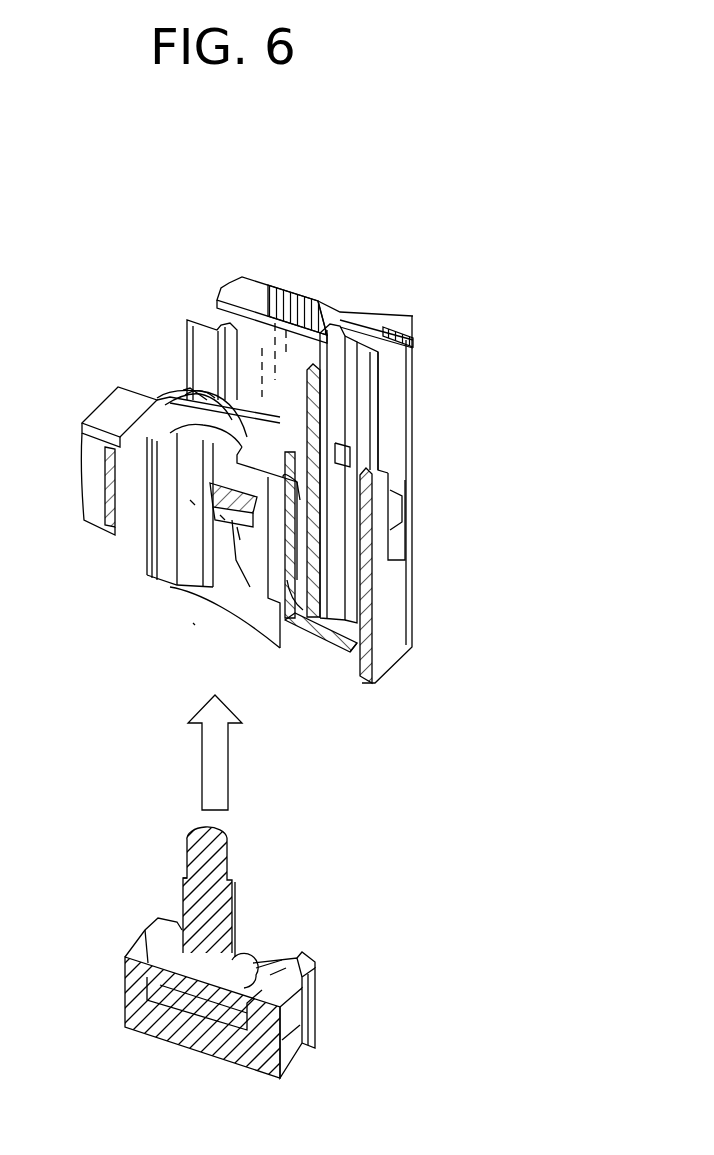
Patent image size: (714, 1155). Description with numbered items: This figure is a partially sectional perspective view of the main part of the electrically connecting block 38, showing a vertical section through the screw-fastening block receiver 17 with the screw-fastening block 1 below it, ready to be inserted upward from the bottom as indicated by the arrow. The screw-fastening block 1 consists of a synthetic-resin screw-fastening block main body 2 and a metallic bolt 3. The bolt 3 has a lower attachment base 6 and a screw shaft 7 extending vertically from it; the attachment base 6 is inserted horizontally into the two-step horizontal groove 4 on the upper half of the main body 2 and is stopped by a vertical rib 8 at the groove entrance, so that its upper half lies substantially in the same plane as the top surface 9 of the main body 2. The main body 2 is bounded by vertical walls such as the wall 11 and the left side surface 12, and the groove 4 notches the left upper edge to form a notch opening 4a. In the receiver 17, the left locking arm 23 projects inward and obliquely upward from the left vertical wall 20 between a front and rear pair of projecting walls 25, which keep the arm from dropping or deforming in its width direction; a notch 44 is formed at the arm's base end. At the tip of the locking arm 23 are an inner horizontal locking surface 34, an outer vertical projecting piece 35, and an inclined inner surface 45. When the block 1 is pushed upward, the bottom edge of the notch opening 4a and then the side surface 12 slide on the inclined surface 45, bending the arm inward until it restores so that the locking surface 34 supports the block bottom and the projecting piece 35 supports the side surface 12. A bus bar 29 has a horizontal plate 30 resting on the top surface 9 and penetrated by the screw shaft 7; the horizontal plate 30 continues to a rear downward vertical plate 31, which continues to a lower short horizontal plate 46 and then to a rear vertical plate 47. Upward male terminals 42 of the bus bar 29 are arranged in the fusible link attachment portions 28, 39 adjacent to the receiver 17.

The screw-fastening block 1 is at (357, 564).
The screw-fastening block main body 2 is at (320, 995).
The bolt 3 is at (236, 866).
The horizontal groove 4 is at (270, 963).
The notch opening 4a is at (288, 963).
The attachment base 6 is at (218, 988).
The screw shaft 7 is at (181, 893).
The vertical rib 8 is at (258, 963).
The top surface 9 is at (150, 948).
The vertical wall 11 is at (288, 1043).
The left side surface 12 is at (305, 950).
The screw-fastening block receiver 17 is at (193, 623).
The left vertical wall 20 is at (245, 545).
The left locking arm 23 is at (240, 513).
The projecting wall 25 is at (190, 500).
The fusible link attachment portion 28 is at (393, 472).
The bus bar 29 is at (323, 652).
The horizontal plate 30 is at (118, 393).
The vertical plate 31 is at (272, 612).
The locking surface 34 is at (220, 515).
The projecting piece 35 is at (210, 447).
The electrically connecting block 38 is at (305, 512).
The fusible link attachment portion 39 is at (220, 297).
The male terminal 42 is at (357, 433).
The notch 44 is at (237, 527).
The inclined inner surface 45 is at (222, 517).
The lower short horizontal plate 46 is at (342, 653).
The rear vertical plate 47 is at (355, 600).